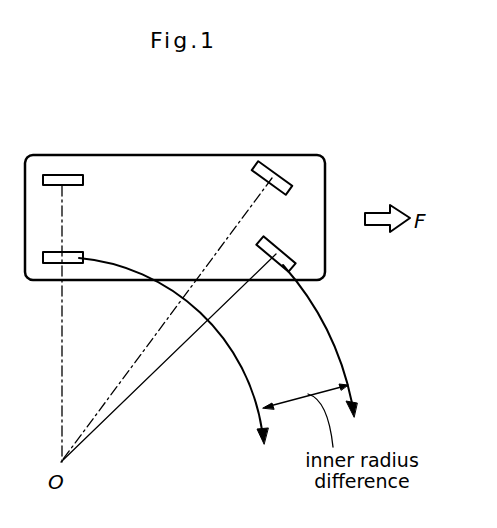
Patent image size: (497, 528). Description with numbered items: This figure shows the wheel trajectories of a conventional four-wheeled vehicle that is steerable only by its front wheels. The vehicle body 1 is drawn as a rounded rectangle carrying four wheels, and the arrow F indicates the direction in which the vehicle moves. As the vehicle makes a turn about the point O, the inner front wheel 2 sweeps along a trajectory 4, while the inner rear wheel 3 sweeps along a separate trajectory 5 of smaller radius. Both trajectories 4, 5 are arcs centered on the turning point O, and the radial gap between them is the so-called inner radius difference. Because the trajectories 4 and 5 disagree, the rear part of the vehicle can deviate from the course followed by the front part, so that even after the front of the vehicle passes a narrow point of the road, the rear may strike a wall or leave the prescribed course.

The vehicle body 1 is at (218, 158).
The inner front wheel 2 is at (283, 266).
The inner rear wheel 3 is at (75, 259).
The trajectory of the inner front wheel 4 is at (336, 341).
The trajectory of the inner rear wheel 5 is at (243, 375).